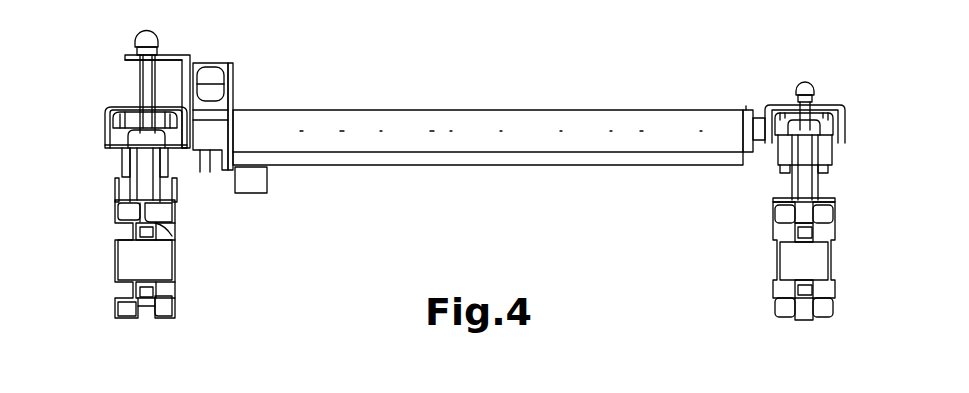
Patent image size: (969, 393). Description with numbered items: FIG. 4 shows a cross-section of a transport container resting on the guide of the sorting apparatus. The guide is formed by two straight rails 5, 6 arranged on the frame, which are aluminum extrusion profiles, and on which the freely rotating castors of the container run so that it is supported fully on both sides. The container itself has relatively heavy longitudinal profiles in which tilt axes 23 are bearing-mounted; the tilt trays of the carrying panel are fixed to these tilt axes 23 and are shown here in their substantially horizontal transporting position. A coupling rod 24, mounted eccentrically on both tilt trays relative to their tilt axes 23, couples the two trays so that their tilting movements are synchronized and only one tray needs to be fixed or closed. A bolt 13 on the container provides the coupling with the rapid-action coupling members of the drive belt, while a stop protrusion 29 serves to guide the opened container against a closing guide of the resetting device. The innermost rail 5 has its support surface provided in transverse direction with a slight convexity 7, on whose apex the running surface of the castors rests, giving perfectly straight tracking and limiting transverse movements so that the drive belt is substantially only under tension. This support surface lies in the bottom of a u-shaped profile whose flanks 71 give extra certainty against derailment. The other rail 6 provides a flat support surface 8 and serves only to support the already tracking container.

The rail 5 is at (176, 258).
The rail 6 is at (778, 222).
The convexity 7 is at (174, 215).
The flat support surface 8 is at (778, 200).
The bolt 13 is at (145, 92).
The tilt axis 23 is at (508, 112).
The coupling rod 24 is at (230, 80).
The stop protrusion 29 is at (257, 185).
The flank 71 is at (112, 192).